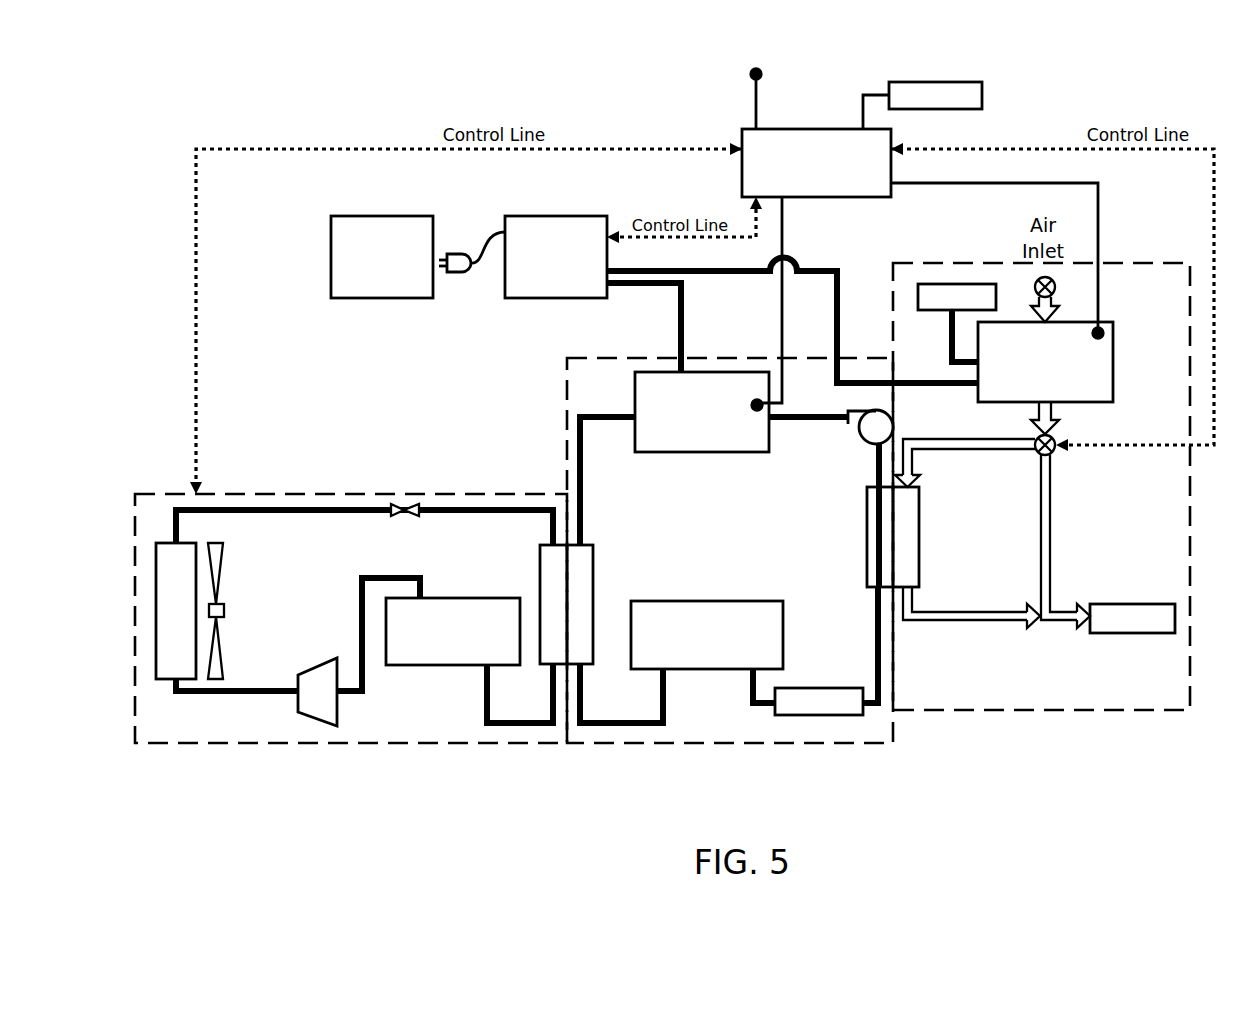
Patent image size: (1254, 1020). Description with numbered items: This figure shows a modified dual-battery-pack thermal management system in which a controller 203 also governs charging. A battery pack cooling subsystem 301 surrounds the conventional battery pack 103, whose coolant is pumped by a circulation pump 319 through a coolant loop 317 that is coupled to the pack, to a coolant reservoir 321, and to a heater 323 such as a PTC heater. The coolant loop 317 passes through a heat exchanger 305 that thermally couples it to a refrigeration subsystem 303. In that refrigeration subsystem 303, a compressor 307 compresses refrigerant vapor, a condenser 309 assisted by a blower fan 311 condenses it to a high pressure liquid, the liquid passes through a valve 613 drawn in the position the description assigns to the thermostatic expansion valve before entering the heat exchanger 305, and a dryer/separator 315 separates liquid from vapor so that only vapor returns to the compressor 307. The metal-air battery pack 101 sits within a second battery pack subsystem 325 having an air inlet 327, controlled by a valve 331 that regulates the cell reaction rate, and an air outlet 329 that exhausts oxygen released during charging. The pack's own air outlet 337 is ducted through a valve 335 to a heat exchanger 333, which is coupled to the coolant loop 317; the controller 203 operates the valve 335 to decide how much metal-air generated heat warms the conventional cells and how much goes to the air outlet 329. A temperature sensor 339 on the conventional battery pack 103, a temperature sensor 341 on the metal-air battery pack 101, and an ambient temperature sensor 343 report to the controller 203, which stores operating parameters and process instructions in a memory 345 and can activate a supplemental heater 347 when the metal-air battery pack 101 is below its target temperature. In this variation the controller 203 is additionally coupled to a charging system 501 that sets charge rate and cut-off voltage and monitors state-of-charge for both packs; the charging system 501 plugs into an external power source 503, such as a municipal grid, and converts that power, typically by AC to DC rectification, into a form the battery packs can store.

The metal-air battery pack 101 is at (1084, 402).
The conventional battery pack 103 is at (736, 452).
The controller 203 is at (853, 129).
The battery pack cooling subsystem 301 is at (703, 752).
The refrigeration subsystem 303 is at (445, 752).
The heat exchanger 305 is at (538, 570).
The compressor 307 is at (318, 698).
The condenser 309 is at (162, 679).
The fan 311 is at (224, 611).
The dryer/separator 315 is at (486, 597).
The coolant loop 317 is at (876, 628).
The circulation pump 319 is at (866, 435).
The coolant reservoir 321 is at (708, 600).
The heater 323 is at (796, 688).
The second battery pack subsystem 325 is at (985, 720).
The air inlet 327 is at (1064, 314).
The air outlet 329 is at (1137, 635).
The valve 331 is at (1057, 287).
The heat exchanger 333 is at (910, 520).
The valve 335 is at (1054, 453).
The air outlet 337 is at (1030, 410).
The temperature sensor 339 is at (763, 399).
The temperature sensor 341 is at (1104, 333).
The temperature sensor 343 is at (750, 74).
The memory 345 is at (945, 82).
The heater 347 is at (943, 283).
The charging system 501 is at (540, 298).
The external power source 503 is at (358, 298).
The expansion valve 613 is at (404, 505).